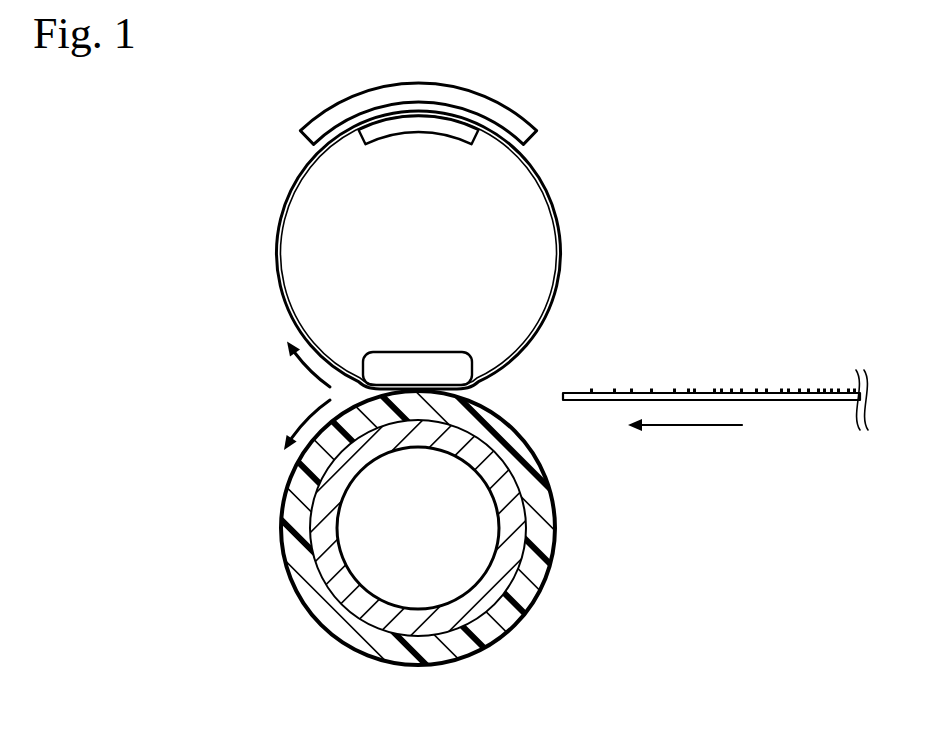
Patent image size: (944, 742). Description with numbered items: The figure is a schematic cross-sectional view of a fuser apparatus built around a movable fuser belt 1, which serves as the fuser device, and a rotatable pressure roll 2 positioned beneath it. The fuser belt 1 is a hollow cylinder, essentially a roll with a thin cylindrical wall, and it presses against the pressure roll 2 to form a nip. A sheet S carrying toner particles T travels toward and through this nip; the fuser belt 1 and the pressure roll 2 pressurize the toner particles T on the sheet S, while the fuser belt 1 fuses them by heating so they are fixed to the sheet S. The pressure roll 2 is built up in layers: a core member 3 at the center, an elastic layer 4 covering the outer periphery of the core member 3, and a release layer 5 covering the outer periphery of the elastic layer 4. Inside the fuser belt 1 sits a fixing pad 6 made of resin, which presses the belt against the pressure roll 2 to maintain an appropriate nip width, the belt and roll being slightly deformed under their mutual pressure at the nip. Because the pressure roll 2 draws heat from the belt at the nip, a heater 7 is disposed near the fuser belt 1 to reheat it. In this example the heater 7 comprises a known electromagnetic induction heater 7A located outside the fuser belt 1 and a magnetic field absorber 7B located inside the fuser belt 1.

The fuser belt 1 is at (234, 281).
The pressure roll 2 is at (397, 519).
The core member 3 is at (333, 577).
The elastic layer 4 is at (298, 555).
The release layer 5 is at (320, 622).
The fixing pad 6 is at (415, 366).
The heater 7 is at (477, 123).
The electromagnetic induction heater 7A is at (503, 107).
The magnetic field absorber 7B is at (427, 134).
The sheet S is at (618, 400).
The toner particles T is at (652, 390).